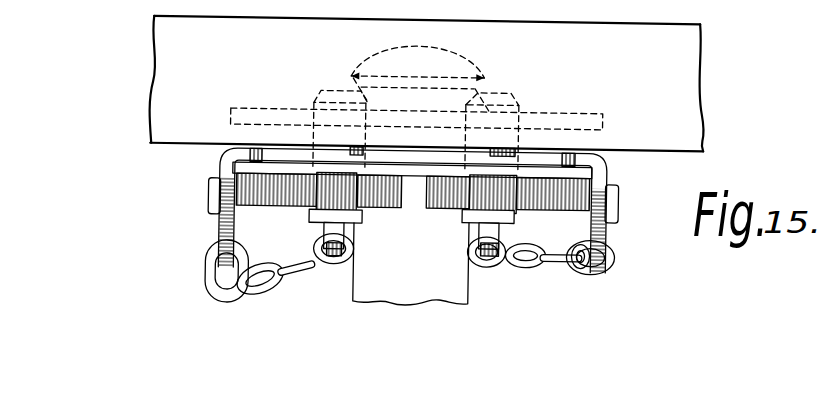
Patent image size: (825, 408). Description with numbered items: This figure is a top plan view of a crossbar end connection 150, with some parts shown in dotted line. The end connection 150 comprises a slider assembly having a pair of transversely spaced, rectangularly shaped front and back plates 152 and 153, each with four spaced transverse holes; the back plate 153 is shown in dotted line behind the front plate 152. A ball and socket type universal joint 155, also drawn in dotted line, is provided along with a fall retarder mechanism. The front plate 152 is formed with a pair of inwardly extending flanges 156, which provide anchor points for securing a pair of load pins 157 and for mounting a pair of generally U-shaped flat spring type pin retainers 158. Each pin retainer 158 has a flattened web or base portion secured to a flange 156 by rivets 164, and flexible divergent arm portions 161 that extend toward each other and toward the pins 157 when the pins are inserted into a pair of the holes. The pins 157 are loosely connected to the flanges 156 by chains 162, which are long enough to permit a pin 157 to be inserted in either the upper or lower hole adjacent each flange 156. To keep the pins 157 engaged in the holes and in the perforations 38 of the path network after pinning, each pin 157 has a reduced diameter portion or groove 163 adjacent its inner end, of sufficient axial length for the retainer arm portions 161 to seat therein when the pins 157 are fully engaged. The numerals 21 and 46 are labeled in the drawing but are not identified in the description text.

The deck plate 21 is at (152, 95).
The perforations 38 is at (721, 11).
The hanger plate 46 is at (474, 284).
The crossbar end connection 150 is at (112, 4).
The front plate 152 is at (541, 161).
The back plate 153 is at (573, 117).
The ball and socket type universal joint 155 is at (448, 56).
The inwardly extending flanges 156 is at (220, 233).
The load pins 157 is at (258, 79).
The pin retainers 158 is at (272, 201).
The arm portions 161 is at (442, 199).
The chains 162 is at (296, 275).
The reduced diameter portion or groove 163 is at (328, 192).
The rivets 164 is at (209, 194).